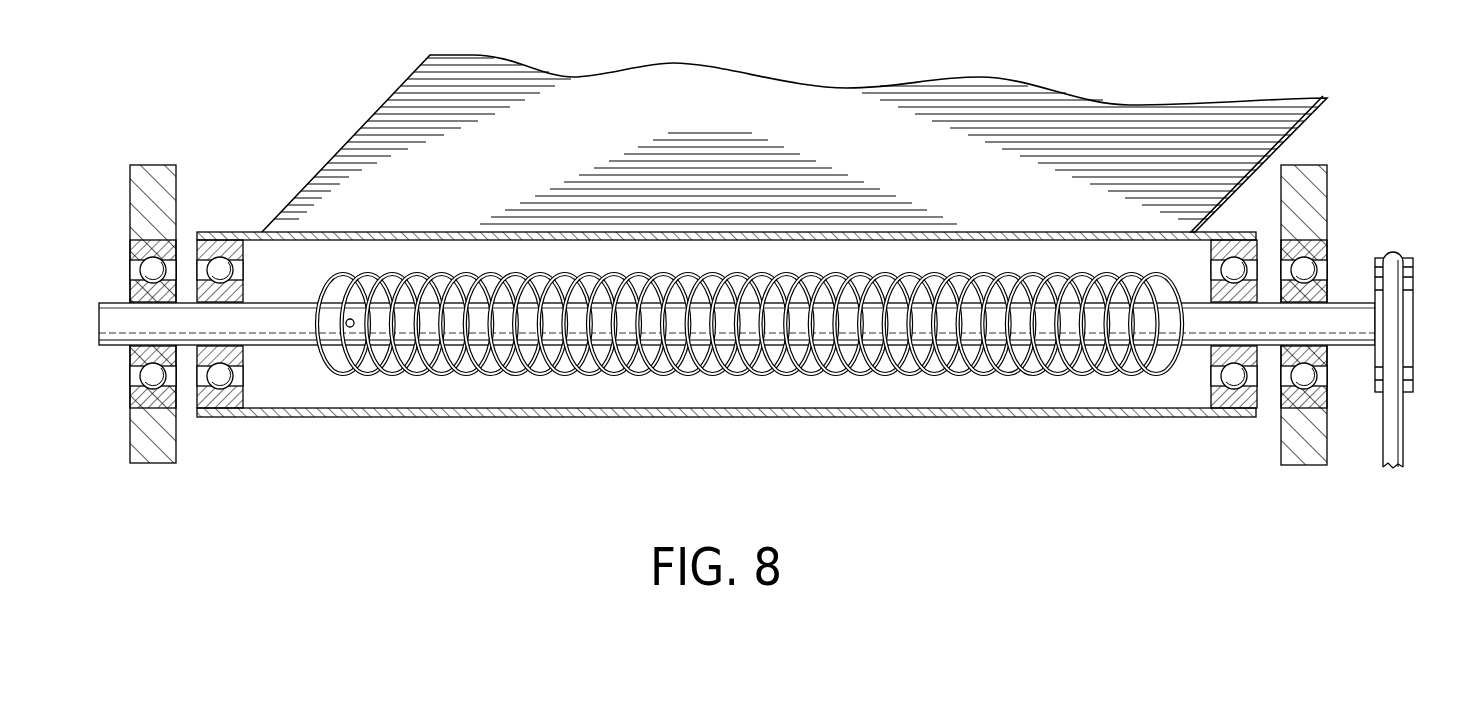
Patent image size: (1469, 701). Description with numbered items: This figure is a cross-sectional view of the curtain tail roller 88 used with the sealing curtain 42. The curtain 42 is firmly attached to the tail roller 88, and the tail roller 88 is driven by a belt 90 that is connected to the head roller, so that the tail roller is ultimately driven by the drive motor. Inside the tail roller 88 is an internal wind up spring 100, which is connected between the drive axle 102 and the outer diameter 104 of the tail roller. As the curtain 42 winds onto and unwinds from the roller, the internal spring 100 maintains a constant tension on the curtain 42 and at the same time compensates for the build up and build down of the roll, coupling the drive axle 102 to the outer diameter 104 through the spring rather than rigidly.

The curtain 42 is at (795, 102).
The tail roller 88 is at (972, 462).
The belt 90 is at (1393, 437).
The internal wind up spring 100 is at (455, 374).
The drive axle 102 is at (1202, 327).
The outer diameter 104 is at (298, 417).